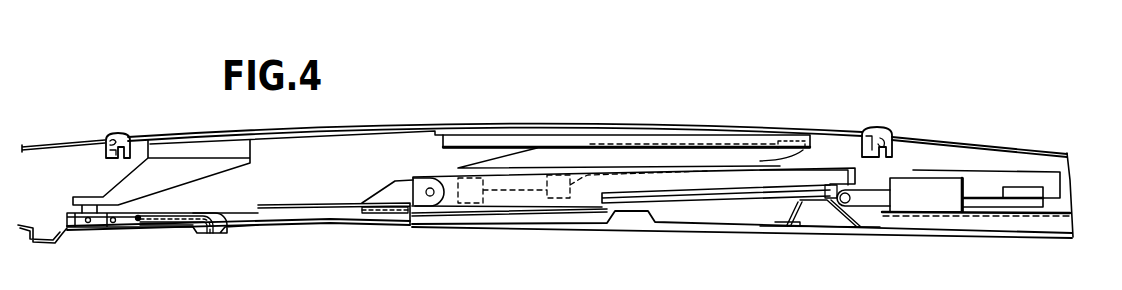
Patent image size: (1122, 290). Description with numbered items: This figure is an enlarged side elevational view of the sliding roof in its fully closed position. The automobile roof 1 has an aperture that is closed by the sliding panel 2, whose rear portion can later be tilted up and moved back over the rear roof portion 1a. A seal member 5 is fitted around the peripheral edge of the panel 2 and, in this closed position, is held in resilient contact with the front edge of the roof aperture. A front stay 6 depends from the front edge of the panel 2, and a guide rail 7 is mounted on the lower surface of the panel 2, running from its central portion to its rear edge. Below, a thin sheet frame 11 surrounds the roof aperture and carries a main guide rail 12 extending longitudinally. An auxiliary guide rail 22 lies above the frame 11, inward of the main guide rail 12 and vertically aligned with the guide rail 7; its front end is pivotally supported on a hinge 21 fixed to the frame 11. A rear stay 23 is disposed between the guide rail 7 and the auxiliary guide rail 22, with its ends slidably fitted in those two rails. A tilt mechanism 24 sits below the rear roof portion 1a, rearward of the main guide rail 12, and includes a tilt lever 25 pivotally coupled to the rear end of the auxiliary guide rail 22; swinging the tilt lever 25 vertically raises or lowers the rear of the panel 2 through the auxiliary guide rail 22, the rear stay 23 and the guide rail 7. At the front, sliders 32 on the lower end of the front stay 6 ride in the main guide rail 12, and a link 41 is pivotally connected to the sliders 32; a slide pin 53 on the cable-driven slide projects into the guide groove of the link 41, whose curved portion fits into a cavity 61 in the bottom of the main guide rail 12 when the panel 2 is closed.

The roof 1 is at (66, 141).
The rear roof portion 1a is at (913, 137).
The sliding panel 2 is at (393, 128).
The seal member 5 is at (118, 133).
The front stay 6 is at (173, 158).
The guide rail 7 is at (510, 141).
The frame 11 is at (505, 227).
The main guide rail 12 is at (325, 212).
The hinge 21 is at (403, 190).
The auxiliary guide rail 22 is at (720, 177).
The rear stay 23 is at (580, 162).
The tilt mechanism 24 is at (943, 160).
The tilt lever 25 is at (872, 203).
The slider 32 is at (103, 224).
The link 41 is at (172, 228).
The slide pin 53 is at (138, 221).
The cavity 61 is at (192, 234).